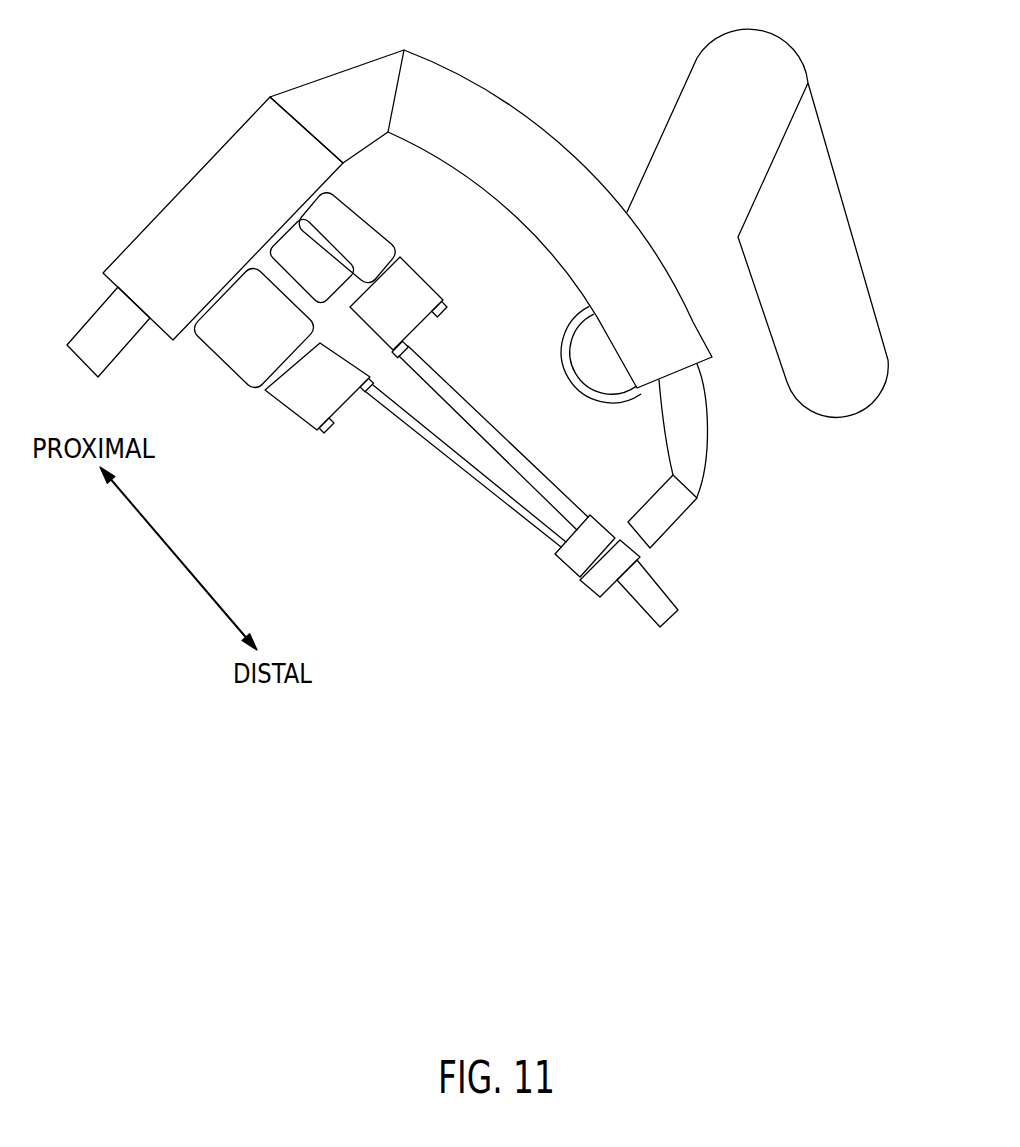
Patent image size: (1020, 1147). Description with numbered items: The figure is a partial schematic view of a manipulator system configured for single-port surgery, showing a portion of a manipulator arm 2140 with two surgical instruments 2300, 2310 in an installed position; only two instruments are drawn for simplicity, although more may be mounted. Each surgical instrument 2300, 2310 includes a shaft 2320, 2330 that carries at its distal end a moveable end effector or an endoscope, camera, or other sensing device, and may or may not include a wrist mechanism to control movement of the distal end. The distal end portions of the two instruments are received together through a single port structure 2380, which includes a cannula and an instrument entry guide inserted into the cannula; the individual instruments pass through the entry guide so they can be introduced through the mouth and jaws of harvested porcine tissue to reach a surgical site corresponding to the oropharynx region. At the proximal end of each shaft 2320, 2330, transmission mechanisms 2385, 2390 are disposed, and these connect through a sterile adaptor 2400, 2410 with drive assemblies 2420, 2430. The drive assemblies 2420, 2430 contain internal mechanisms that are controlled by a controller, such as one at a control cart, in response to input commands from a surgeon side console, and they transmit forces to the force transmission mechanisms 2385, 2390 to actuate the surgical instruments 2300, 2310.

The manipulator arm 2140 is at (565, 152).
The surgical instrument 2300 is at (497, 465).
The surgical instrument 2310 is at (417, 360).
The shaft 2320 is at (493, 495).
The shaft 2330 is at (508, 447).
The single port structure 2380 is at (660, 597).
The transmission mechanism 2385 is at (297, 418).
The transmission mechanism 2390 is at (437, 290).
The sterile adaptor 2400 is at (273, 398).
The sterile adaptor 2410 is at (403, 253).
The drive assembly 2420 is at (197, 345).
The drive assembly 2430 is at (350, 197).